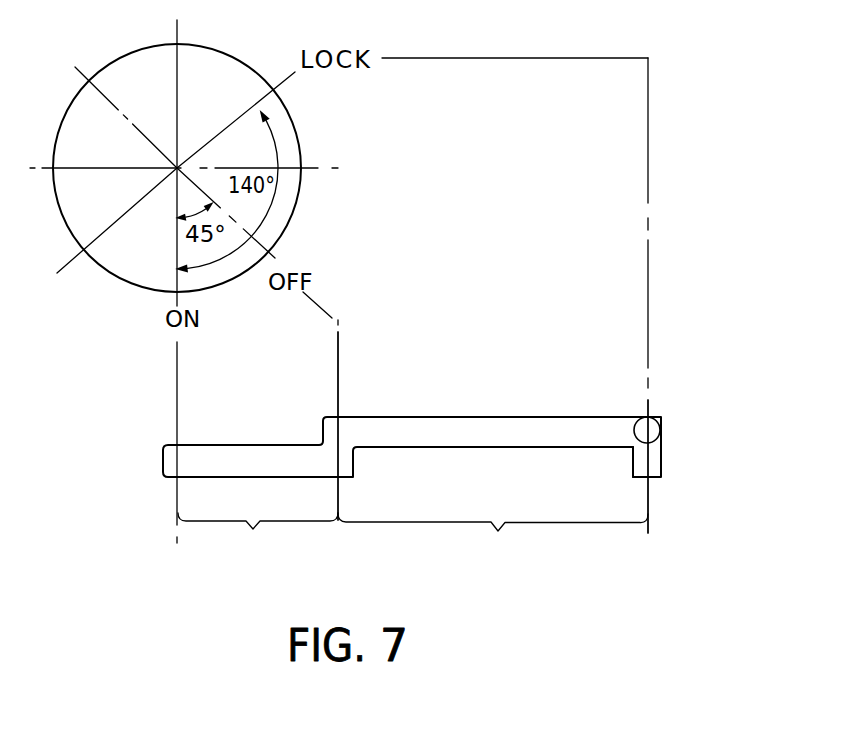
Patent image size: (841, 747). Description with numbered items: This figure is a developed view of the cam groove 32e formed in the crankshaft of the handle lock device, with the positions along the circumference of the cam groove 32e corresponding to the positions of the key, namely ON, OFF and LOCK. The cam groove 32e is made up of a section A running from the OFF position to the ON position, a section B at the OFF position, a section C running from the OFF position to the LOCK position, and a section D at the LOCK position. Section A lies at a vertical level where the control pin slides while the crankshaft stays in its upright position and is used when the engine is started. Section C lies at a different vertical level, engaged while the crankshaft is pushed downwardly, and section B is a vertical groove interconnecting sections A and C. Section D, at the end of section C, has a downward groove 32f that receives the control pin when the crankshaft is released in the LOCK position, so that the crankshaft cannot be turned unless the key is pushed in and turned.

The cam groove 32e is at (447, 413).
The downward groove 32f is at (650, 475).
The section A is at (258, 534).
The section B is at (344, 443).
The section C is at (493, 534).
The section D is at (653, 477).